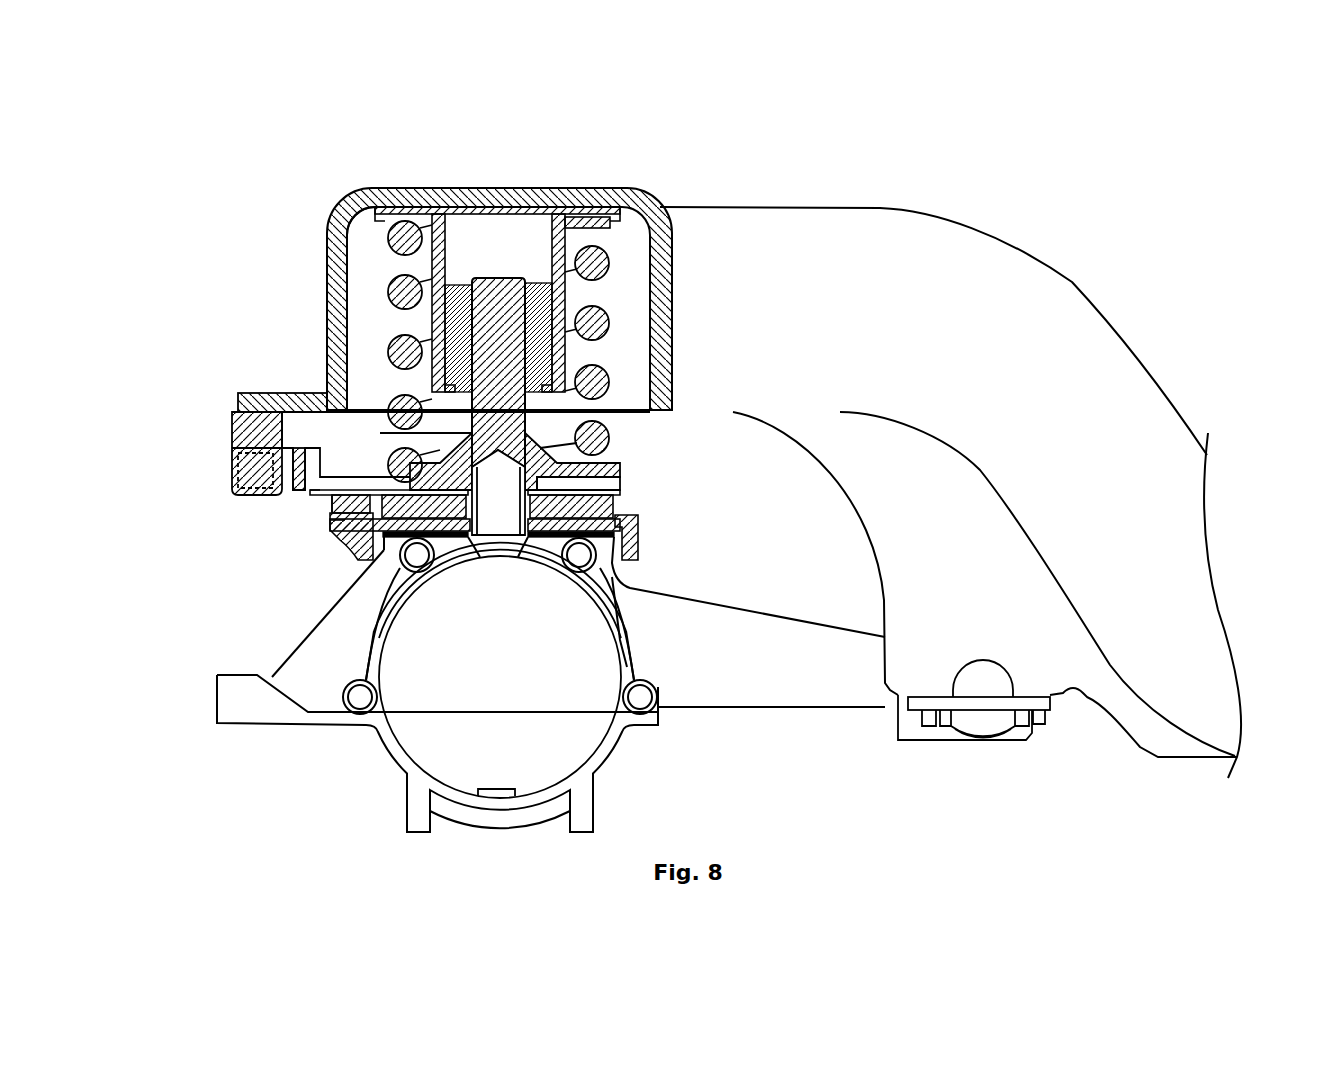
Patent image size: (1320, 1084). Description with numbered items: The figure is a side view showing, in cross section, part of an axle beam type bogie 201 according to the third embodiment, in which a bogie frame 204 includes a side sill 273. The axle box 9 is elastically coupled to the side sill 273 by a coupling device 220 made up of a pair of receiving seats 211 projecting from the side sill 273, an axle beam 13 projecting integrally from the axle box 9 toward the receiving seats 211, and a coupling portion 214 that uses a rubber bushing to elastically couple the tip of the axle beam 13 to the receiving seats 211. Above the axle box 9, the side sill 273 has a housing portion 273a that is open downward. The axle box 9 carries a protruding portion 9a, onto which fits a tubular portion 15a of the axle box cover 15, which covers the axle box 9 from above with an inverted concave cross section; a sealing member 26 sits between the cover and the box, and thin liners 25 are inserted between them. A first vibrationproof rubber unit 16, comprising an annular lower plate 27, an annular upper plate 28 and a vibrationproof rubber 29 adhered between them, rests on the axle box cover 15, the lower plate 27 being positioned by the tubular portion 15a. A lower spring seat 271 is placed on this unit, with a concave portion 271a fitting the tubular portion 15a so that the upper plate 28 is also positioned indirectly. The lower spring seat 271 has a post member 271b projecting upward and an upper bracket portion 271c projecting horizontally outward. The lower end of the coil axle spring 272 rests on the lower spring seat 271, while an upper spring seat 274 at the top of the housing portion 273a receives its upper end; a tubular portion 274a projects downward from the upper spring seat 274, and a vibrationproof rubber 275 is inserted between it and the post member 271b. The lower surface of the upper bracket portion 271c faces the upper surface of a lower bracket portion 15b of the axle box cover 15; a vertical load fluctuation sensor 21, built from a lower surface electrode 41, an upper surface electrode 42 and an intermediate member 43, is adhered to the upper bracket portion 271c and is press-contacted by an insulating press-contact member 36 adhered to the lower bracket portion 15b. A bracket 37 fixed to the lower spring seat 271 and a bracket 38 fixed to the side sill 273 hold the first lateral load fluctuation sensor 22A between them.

The axle box 9 is at (375, 770).
The protruding portion 9a is at (503, 530).
The axle beam 13 is at (748, 707).
The axle box cover 15 is at (630, 570).
The tubular portion 15a is at (465, 550).
The lower bracket portion 15b is at (357, 540).
The first vibrationproof rubber unit 16 is at (712, 464).
The vertical load fluctuation sensor 21 is at (228, 512).
The first lateral load fluctuation sensor 22A is at (232, 463).
The liner 25 is at (562, 548).
The sealing member 26 is at (638, 548).
The lower plate 27 is at (620, 526).
The upper plate 28 is at (620, 492).
The vibrationproof rubber 29 is at (613, 505).
The press-contact member 36 is at (345, 535).
The bracket 37 is at (290, 437).
The bracket 38 is at (232, 412).
The lower surface electrode 41 is at (340, 522).
The upper surface electrode 42 is at (312, 494).
The intermediate member 43 is at (332, 504).
The bogie 201 is at (1010, 178).
The bogie frame 204 is at (1073, 280).
The receiving seat 211 is at (893, 563).
The coupling portion 214 is at (962, 758).
The coupling device 220 is at (865, 783).
The lower spring seat 271 is at (612, 477).
The concave portion 271a is at (470, 437).
The post member 271b is at (490, 290).
The upper bracket portion 271c is at (347, 473).
The axle spring 272 is at (345, 215).
The side sill 273 is at (800, 207).
The housing portion 273a is at (327, 262).
The upper spring seat 274 is at (388, 210).
The tubular portion 274a is at (455, 228).
The vibrationproof rubber 275 is at (540, 243).